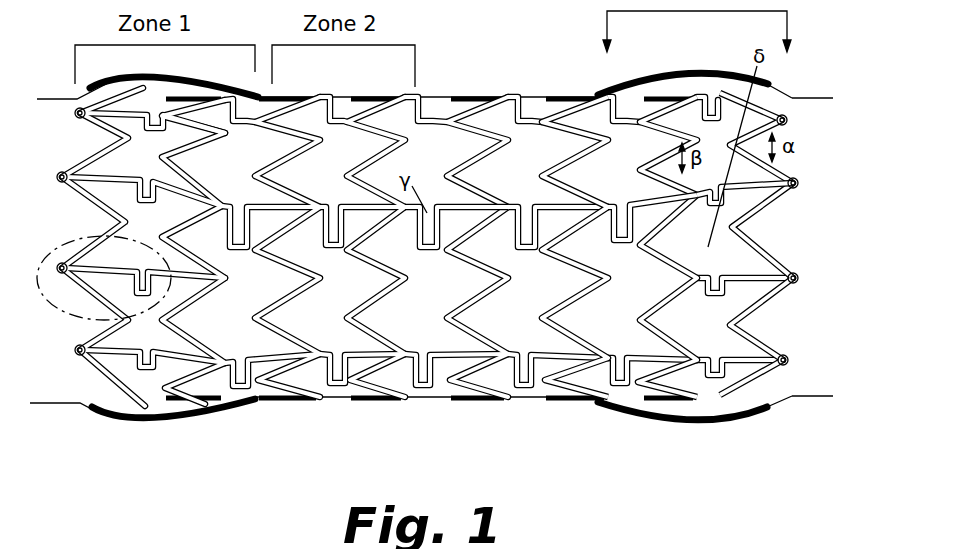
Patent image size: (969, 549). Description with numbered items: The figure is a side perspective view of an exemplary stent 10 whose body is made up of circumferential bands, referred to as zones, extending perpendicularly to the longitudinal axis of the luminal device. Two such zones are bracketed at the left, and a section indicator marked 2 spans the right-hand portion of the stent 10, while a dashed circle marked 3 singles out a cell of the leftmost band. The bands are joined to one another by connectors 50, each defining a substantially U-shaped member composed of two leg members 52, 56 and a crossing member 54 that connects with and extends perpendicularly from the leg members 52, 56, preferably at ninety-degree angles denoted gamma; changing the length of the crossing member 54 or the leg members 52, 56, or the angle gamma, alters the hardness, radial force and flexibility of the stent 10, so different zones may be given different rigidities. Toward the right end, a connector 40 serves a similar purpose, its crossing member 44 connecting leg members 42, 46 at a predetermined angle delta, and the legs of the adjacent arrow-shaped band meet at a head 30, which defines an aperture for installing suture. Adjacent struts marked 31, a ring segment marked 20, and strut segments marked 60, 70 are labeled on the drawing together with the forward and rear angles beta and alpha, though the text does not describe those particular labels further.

The stent 10 is at (813, 422).
The ring 20 is at (636, 200).
The head 30 is at (787, 360).
The strut 31 is at (737, 325).
The connector 40 is at (717, 204).
The leg member 42 is at (712, 198).
The crossing member 44 is at (725, 201).
The leg member 46 is at (718, 193).
The connector 50 is at (433, 232).
The leg member 52 is at (417, 235).
The crossing member 54 is at (420, 242).
The leg member 56 is at (452, 242).
The connector 60 is at (606, 205).
The strut segment 70 is at (626, 193).
The stent cell 3 is at (70, 317).
The section line 2 is at (695, 46).